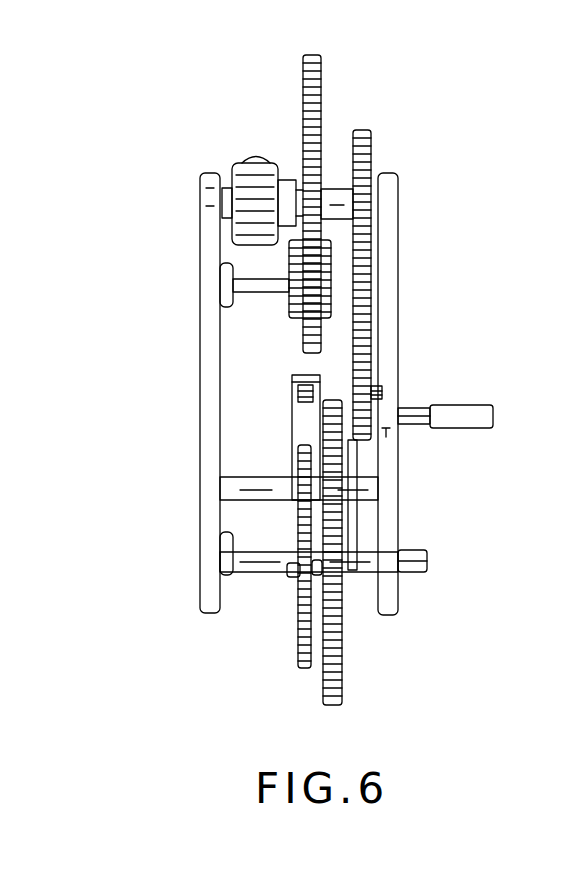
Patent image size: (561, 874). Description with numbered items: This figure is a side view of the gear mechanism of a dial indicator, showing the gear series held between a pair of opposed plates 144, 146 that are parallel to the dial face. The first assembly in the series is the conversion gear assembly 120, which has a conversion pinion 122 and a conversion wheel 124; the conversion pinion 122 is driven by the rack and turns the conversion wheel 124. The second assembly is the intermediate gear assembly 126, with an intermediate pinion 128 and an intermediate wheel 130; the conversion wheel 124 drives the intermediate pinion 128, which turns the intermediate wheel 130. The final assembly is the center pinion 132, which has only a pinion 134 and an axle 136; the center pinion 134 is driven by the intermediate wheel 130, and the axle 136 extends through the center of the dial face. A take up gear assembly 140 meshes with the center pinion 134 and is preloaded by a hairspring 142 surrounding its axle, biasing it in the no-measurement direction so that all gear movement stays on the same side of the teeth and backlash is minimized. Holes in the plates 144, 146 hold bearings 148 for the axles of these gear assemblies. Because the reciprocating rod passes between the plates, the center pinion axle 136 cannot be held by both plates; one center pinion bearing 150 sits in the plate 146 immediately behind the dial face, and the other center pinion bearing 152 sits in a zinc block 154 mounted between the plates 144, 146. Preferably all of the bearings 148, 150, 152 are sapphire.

The conversion gear assembly 120 is at (274, 126).
The conversion pinion 122 is at (257, 160).
The conversion wheel 124 is at (322, 72).
The intermediate gear assembly 126 is at (347, 339).
The intermediate pinion 128 is at (289, 314).
The intermediate wheel 130 is at (371, 137).
The center pinion 132 is at (335, 381).
The center pinion 134 is at (382, 390).
The center pinion axle 136 is at (472, 406).
The take up gear assembly 140 is at (345, 655).
The hairspring 142 is at (299, 640).
The plate 144 is at (212, 569).
The plate 146 is at (390, 595).
The bearings 148 is at (220, 224).
The center pinion bearing 150 is at (386, 437).
The center pinion bearing 152 is at (313, 410).
The zinc block 154 is at (303, 425).